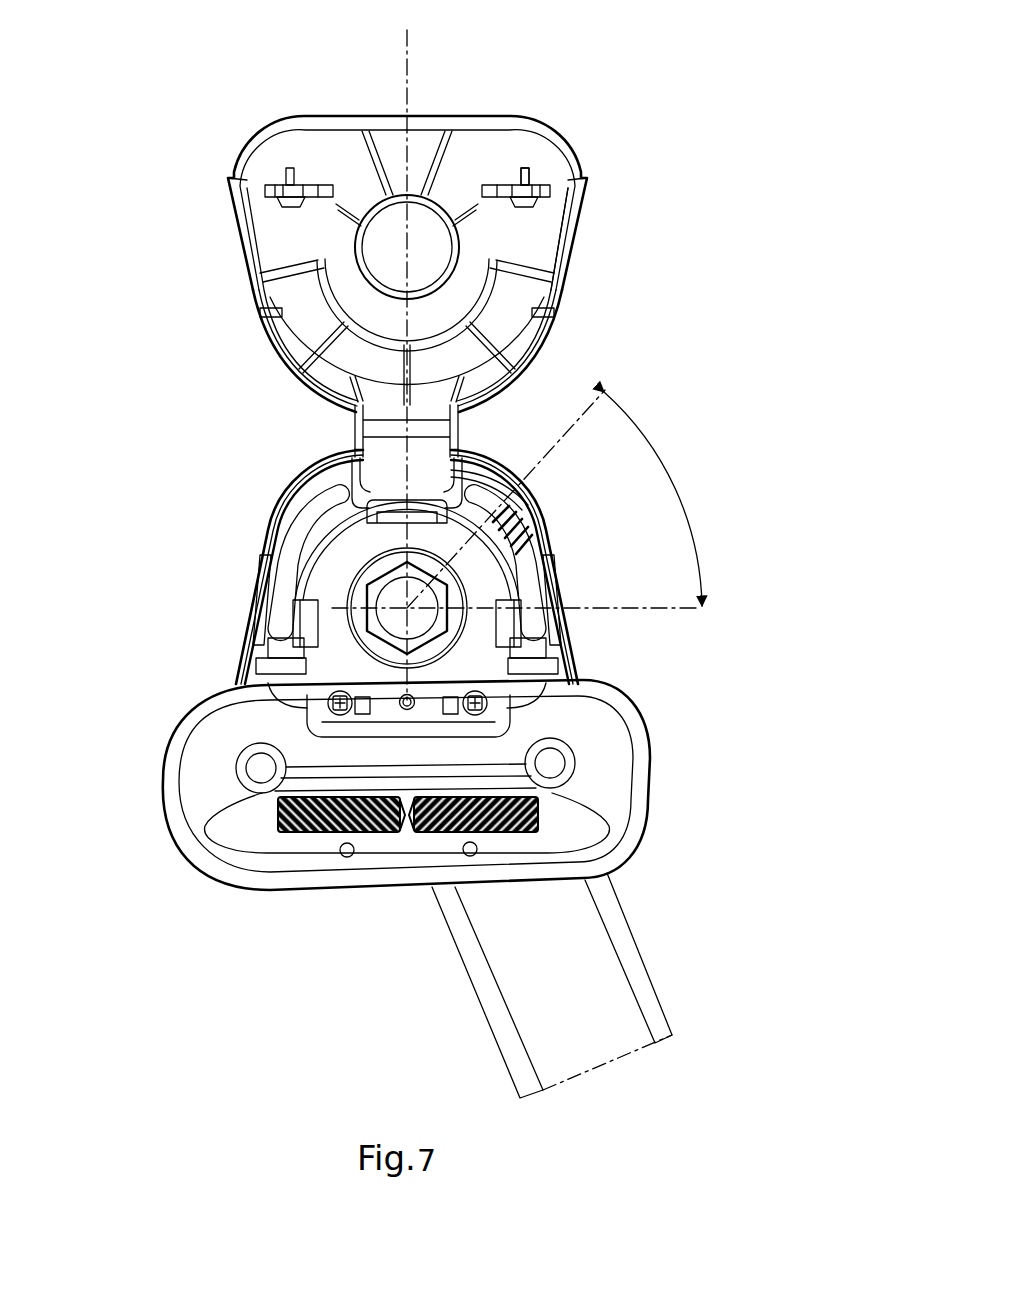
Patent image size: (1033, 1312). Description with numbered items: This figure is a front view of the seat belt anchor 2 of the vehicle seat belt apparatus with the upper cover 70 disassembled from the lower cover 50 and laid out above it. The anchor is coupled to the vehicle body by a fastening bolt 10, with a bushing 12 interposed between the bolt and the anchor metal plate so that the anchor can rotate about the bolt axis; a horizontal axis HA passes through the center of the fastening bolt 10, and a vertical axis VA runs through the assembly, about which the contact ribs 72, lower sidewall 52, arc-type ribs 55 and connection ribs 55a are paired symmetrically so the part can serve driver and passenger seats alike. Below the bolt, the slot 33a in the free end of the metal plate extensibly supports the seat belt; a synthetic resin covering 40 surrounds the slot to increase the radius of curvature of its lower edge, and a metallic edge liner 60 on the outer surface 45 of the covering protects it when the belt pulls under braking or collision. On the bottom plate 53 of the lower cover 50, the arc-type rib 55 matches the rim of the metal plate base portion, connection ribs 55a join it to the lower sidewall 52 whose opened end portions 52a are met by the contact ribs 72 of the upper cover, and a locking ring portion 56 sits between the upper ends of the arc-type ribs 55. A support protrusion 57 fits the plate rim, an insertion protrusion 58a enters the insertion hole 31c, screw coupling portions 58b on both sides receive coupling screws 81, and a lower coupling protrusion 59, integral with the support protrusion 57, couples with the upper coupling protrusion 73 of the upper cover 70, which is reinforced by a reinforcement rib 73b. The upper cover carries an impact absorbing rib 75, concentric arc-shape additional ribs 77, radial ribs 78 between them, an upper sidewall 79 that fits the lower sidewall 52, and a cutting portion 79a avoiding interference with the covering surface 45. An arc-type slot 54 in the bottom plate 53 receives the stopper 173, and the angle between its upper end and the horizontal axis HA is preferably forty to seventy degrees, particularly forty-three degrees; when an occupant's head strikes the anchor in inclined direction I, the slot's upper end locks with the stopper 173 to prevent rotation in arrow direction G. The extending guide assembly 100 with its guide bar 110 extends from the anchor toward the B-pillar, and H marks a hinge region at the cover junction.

The seat belt anchor 2 is at (288, 107).
The fastening bolt 10 is at (440, 620).
The bushing 12 is at (357, 600).
The insertion hole 31c is at (407, 710).
The slot 33a is at (553, 770).
The covering 40 is at (640, 747).
The outer surface of the covering 45 is at (215, 744).
The lower cover 50 is at (285, 475).
The lower sidewall 52 is at (520, 460).
The opened end portions of the lower sidewall 52a is at (545, 530).
The bottom plate 53 is at (298, 510).
The arc-type slot 54 is at (287, 566).
The arc-type rib 55 is at (520, 480).
The connection ribs 55a is at (475, 455).
The locking ring portion 56 is at (392, 518).
The support protrusion 57 is at (310, 618).
The insertion protrusion 58a is at (363, 714).
The screw coupling portions 58b is at (340, 717).
The lower coupling protrusion 59 is at (288, 648).
The metallic edge liner 60 is at (275, 828).
The upper cover 70 is at (580, 298).
The contact ribs 72 is at (270, 313).
The upper coupling protrusion 73 is at (533, 210).
The reinforcement rib 73b is at (525, 168).
The impact absorbing rib 75 is at (357, 237).
The arc-shape additional rib 77 is at (317, 297).
The radial ribs 78 is at (326, 335).
The upper sidewall 79 is at (575, 238).
The cutting portion 79a is at (450, 123).
The coupling screws 81 is at (308, 832).
The extending guide assembly 100 is at (597, 985).
The guide bar 110 is at (617, 1005).
The stopper 173 is at (517, 533).
The vertical axis VA is at (405, 55).
The horizontal axis HA is at (682, 608).
The hinge portion H is at (372, 437).
The inclined direction I is at (562, 498).
The arrow direction G is at (630, 883).